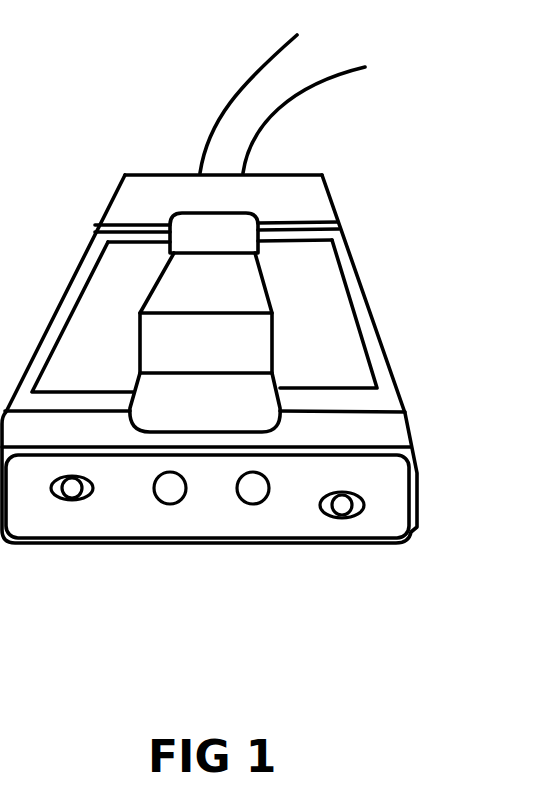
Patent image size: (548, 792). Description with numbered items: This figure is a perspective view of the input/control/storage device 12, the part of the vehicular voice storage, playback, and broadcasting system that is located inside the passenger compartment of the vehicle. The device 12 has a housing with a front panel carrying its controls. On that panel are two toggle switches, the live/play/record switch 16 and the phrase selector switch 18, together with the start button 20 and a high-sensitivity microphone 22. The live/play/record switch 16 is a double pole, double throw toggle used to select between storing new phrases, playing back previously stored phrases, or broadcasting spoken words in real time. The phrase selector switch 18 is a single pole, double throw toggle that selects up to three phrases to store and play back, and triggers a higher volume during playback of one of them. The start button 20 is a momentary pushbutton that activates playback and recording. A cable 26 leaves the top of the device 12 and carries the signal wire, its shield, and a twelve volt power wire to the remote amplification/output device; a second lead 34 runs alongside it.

The input/control/storage device 12 is at (349, 267).
The live/play/record switch 16 is at (70, 500).
The phrase selector switch 18 is at (342, 518).
The start button 20 is at (170, 504).
The high-sensitivity microphone 22 is at (253, 504).
The cable 26 is at (270, 110).
The cable lead 34 is at (253, 73).